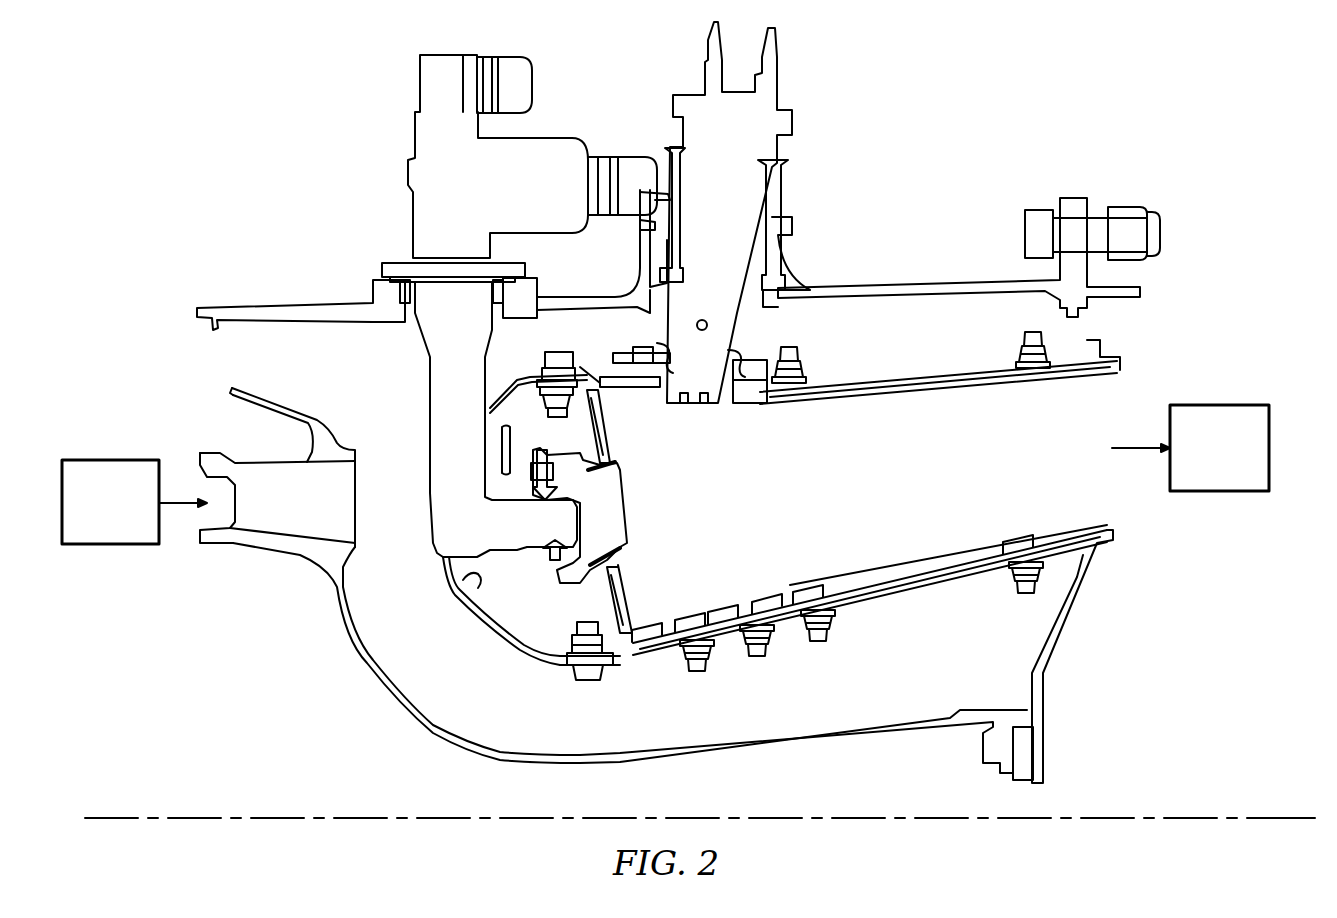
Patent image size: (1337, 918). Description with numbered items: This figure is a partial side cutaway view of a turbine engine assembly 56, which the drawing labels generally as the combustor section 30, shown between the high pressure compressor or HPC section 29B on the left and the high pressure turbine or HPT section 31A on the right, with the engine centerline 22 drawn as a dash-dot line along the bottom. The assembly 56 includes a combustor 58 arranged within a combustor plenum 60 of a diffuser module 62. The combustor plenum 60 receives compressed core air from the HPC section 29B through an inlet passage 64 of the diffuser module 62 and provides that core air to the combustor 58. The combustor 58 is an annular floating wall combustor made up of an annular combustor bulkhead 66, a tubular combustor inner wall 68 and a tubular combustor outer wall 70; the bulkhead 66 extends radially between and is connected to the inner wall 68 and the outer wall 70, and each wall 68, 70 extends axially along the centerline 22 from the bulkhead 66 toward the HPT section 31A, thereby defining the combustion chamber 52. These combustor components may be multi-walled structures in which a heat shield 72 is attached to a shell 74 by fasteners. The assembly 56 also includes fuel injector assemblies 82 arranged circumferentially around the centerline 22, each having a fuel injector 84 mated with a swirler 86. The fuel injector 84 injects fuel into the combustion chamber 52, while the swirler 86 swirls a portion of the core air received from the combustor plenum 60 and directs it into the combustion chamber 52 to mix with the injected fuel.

The centerline 22 is at (1275, 817).
The HPC section 29B is at (83, 517).
The combustor section 30 is at (1057, 125).
The HPT section 31A is at (1194, 466).
The combustion chamber 52 is at (888, 488).
The turbine engine assembly 56 is at (905, 166).
The combustor 58 is at (882, 382).
The combustor plenum 60 is at (360, 373).
The diffuser module 62 is at (963, 284).
The inlet passage 64 is at (280, 522).
The combustor bulkhead 66 is at (602, 602).
The combustor inner wall 68 is at (949, 580).
The combustor outer wall 70 is at (989, 392).
The heat shield 72 is at (623, 588).
The shell 74 is at (612, 668).
The fuel injector assembly 82 is at (433, 570).
The fuel injector 84 is at (428, 442).
The swirler 86 is at (623, 497).